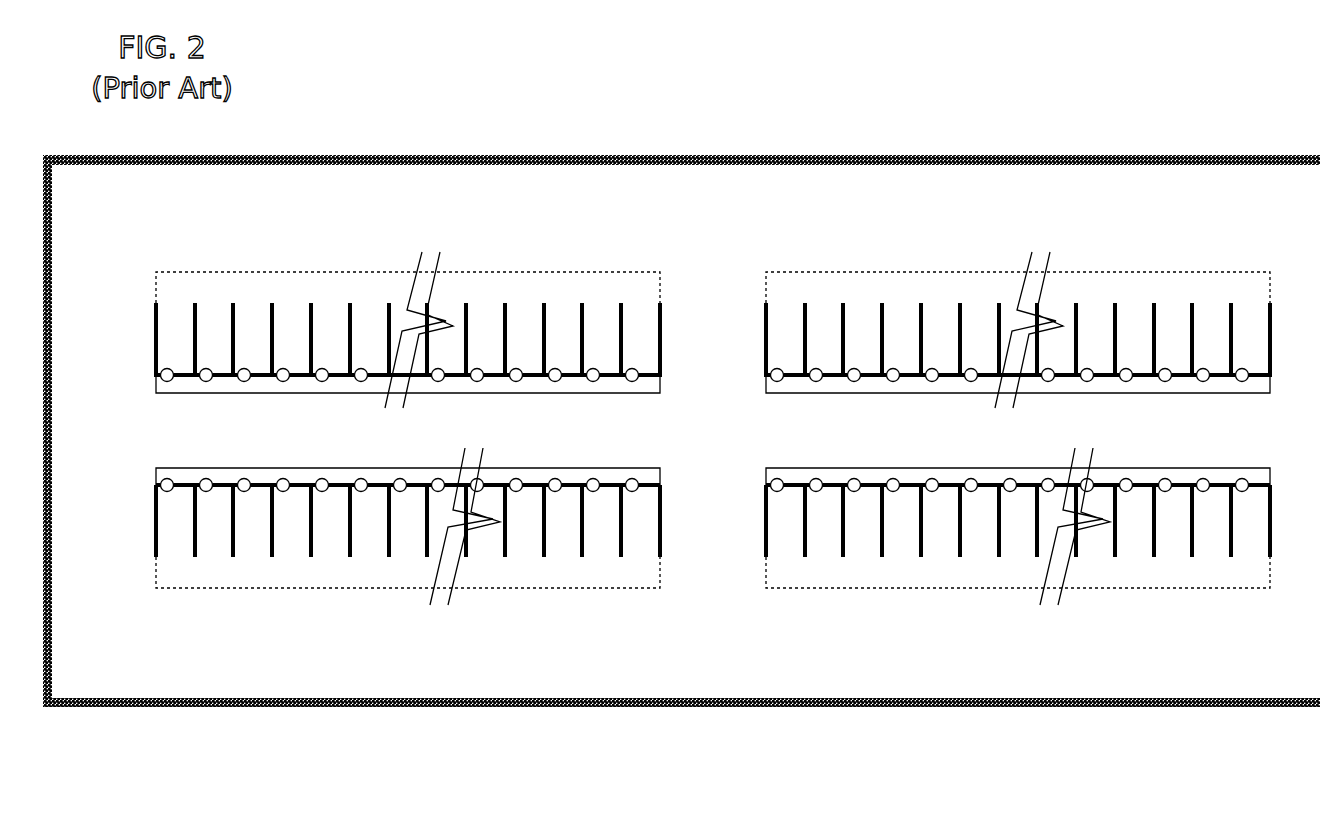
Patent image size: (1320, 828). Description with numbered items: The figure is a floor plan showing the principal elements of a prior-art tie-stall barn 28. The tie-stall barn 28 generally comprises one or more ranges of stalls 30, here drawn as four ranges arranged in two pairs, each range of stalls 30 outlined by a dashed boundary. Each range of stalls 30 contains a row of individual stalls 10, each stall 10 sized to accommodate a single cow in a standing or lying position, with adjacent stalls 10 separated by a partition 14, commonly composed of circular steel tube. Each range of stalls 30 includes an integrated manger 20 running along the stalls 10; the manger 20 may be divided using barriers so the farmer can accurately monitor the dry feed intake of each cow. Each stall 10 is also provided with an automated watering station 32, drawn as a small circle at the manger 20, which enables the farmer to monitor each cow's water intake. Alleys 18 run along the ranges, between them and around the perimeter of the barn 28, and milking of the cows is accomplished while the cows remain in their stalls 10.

The stall 10 is at (254, 305).
The partition 14 is at (350, 305).
The alley 18 is at (414, 211).
The integrated manger 20 is at (375, 390).
The tie-stall barn 28 is at (567, 138).
The range of stalls 30 is at (320, 222).
The automated watering station 32 is at (283, 382).